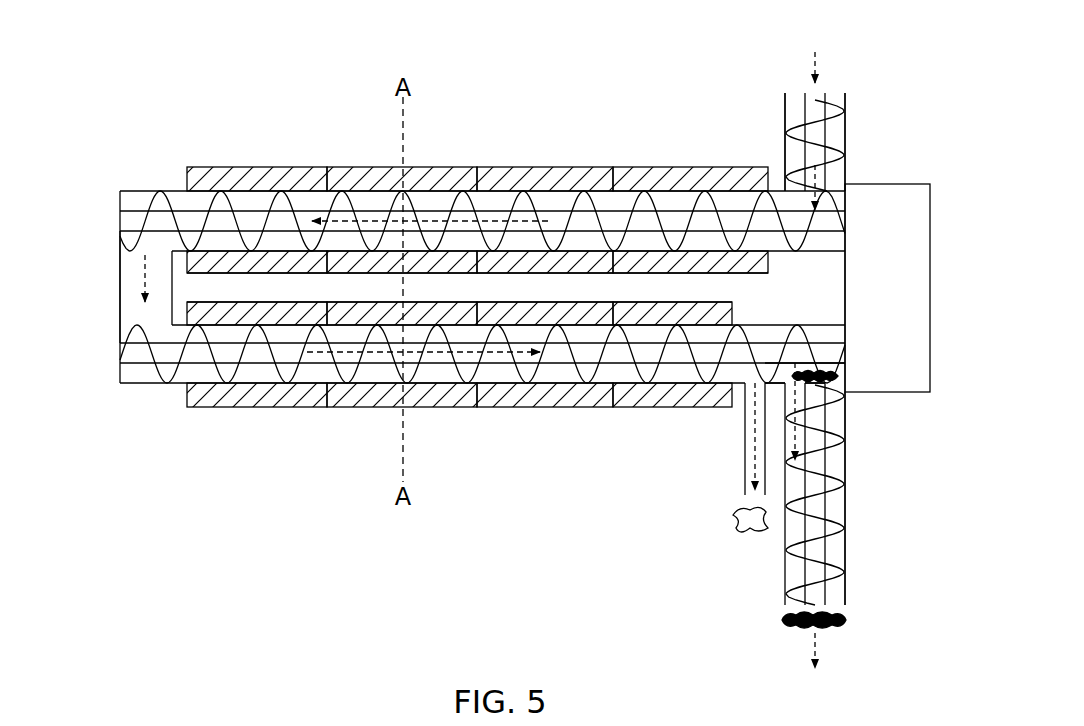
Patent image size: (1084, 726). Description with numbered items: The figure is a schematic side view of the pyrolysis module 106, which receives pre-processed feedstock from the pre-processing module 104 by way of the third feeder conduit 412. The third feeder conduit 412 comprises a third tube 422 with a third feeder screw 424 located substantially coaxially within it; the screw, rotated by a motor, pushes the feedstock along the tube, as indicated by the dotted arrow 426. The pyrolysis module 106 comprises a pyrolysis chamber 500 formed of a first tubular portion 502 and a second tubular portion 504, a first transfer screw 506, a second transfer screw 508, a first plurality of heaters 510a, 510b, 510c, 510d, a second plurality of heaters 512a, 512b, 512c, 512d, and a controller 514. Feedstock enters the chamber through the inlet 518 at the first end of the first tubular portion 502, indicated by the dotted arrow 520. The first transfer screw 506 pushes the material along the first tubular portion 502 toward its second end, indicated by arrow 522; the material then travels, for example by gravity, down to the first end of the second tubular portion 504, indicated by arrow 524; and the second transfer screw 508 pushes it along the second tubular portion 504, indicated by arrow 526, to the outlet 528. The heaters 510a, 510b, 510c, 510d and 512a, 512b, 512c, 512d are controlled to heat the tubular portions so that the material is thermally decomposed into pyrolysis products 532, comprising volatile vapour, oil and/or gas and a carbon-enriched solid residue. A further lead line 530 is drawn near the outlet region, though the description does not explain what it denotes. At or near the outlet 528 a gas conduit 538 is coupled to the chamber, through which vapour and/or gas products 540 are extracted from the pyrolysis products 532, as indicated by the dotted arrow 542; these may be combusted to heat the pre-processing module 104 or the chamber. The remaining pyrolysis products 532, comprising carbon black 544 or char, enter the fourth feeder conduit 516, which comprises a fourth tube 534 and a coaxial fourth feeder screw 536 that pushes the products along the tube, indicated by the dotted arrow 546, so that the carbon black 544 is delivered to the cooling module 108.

The pyrolysis module 106 is at (240, 92).
The pyrolysis chamber 500 is at (105, 197).
The first tubular portion 502 is at (460, 202).
The second tubular portion 504 is at (515, 375).
The first transfer screw 506 is at (427, 210).
The second transfer screw 508 is at (602, 388).
The heater 510a is at (247, 168).
The heater 510b is at (355, 168).
The heater 510c is at (525, 180).
The heater 510d is at (645, 168).
The heater 512a is at (255, 407).
The heater 512b is at (362, 407).
The heater 512c is at (548, 403).
The heater 512d is at (637, 403).
The controller 514 is at (890, 392).
The fourth feeder conduit 516 is at (852, 475).
The inlet 518 is at (832, 185).
The dotted arrow indicating feedstock introduction 520 is at (785, 185).
The dotted arrow indicating transfer along first tubular portion 522 is at (437, 217).
The dotted arrow indicating transfer between tubular portions 524 is at (137, 283).
The dotted arrow indicating transfer along second tubular portion 526 is at (372, 350).
The outlet 528 is at (790, 375).
The outlet tube wall 530 is at (790, 402).
The pyrolysis products 532 is at (820, 367).
The fourth tube 534 is at (786, 562).
The fourth feeder screw 536 is at (835, 510).
The gas conduit 538 is at (743, 462).
The vapour and/or gas products 540 is at (730, 522).
The dotted arrow indicating gas extraction 542 is at (752, 453).
The carbon black 544 is at (848, 622).
The dotted arrow indicating transfer along fourth feeder conduit 546 is at (812, 645).
The third feeder conduit 412 is at (850, 107).
The third tube 422 is at (786, 100).
The third feeder screw 424 is at (788, 127).
The dotted arrow indicating feedstock transfer 426 is at (823, 65).
The pre-processing module 104 is at (815, 31).
The cooling module 108 is at (814, 693).